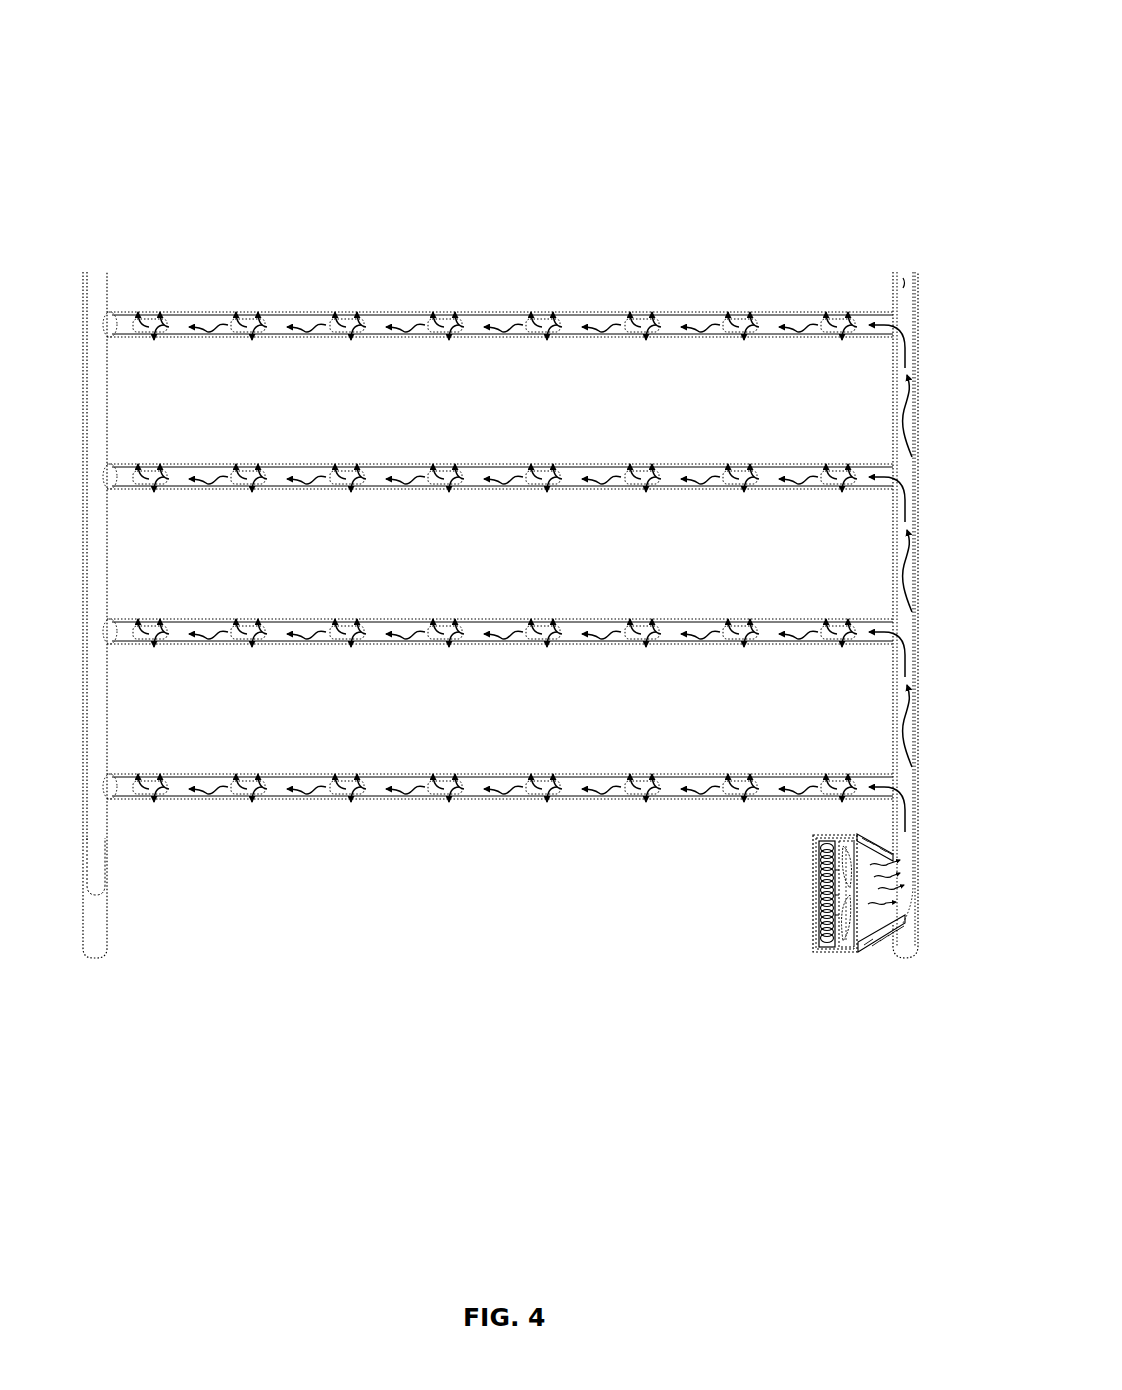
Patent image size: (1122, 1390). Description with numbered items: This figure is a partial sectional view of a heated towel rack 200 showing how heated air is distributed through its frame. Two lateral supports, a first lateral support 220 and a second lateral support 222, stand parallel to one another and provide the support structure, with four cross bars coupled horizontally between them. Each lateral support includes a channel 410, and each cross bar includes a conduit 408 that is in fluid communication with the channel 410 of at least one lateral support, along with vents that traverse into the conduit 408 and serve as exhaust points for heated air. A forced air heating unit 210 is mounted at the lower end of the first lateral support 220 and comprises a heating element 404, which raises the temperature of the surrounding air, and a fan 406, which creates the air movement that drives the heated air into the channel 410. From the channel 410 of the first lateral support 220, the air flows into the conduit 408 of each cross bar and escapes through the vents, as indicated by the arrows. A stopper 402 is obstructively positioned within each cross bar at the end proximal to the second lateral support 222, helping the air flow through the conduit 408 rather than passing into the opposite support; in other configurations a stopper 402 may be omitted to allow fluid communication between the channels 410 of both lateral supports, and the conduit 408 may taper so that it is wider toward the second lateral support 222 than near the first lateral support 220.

The vertical farming system 200 is at (901, 80).
The forced air heating unit 210 is at (790, 912).
The first lateral support 220 is at (900, 273).
The second lateral support 222 is at (85, 271).
The stopper 402 is at (113, 790).
The heating element 404 is at (827, 937).
The fan 406 is at (840, 935).
The conduit 408 is at (512, 792).
The channel 410 is at (905, 795).